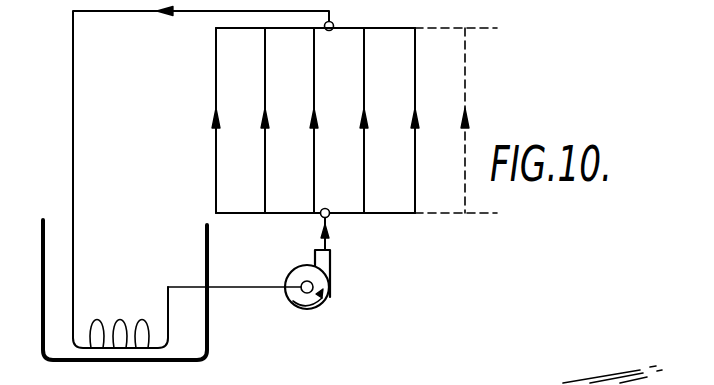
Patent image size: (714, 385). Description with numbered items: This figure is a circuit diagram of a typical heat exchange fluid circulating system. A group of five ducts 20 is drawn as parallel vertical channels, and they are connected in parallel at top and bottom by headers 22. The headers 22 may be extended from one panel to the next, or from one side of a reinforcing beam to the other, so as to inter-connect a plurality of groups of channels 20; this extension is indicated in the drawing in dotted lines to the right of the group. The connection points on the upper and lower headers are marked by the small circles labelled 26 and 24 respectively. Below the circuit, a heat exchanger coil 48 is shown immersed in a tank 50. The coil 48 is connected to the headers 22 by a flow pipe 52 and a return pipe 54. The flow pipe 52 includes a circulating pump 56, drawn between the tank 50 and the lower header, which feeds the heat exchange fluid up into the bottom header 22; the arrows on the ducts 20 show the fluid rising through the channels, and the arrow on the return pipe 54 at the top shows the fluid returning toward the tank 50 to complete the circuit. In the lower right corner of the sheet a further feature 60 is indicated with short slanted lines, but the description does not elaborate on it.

The ducts 20 is at (365, 88).
The headers 22 is at (392, 27).
The inlet header 24 is at (319, 218).
The outlet header 26 is at (337, 24).
The heat exchanger coil 48 is at (123, 318).
The tank 50 is at (205, 312).
The flow pipe 52 is at (330, 240).
The return pipe 54 is at (73, 135).
The circulating pump 56 is at (330, 293).
The flow lines 60 is at (602, 375).